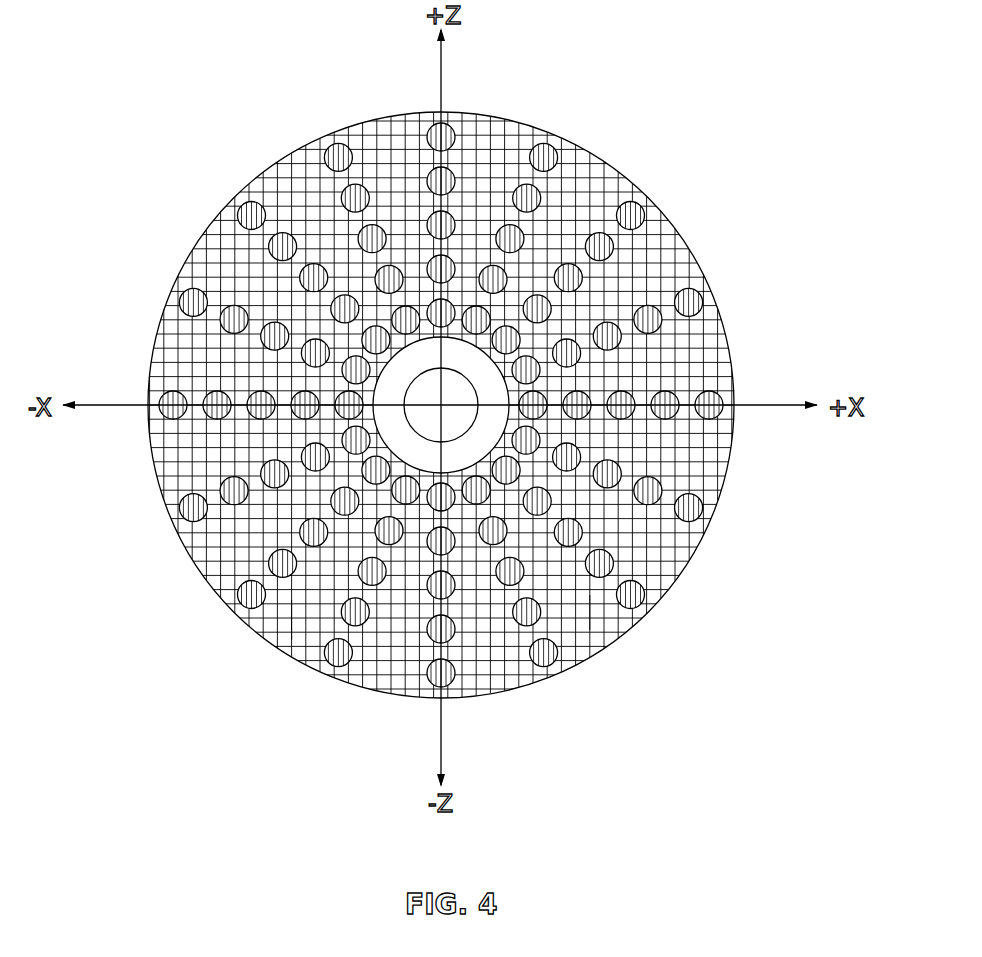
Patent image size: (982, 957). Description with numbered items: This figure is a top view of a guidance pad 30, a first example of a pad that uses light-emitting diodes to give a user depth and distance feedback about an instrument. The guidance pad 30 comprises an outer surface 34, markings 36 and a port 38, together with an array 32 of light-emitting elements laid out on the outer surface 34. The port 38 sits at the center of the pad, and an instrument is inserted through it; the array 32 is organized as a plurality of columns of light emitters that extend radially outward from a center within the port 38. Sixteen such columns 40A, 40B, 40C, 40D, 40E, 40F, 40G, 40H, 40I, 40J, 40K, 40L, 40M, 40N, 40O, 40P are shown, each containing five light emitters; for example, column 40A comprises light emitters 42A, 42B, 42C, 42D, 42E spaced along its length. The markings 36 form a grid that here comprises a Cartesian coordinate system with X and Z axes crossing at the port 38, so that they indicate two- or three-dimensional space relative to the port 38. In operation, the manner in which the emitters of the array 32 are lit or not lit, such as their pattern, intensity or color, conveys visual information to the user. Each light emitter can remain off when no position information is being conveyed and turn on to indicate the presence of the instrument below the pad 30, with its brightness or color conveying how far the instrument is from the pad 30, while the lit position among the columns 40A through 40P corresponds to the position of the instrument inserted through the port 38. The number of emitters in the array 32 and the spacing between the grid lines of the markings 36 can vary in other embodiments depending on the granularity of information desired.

The guidance pad 30 is at (432, 397).
The array of light-emitting elements 32 is at (692, 387).
The outer surface 34 is at (295, 620).
The markings 36 is at (596, 613).
The port 38 is at (463, 358).
The column of light emitters 40A is at (436, 186).
The column of light emitters 40B is at (576, 146).
The column of light emitters 40C is at (648, 191).
The column of light emitters 40D is at (707, 287).
The column of light emitters 40E is at (725, 442).
The column of light emitters 40F is at (710, 531).
The column of light emitters 40G is at (659, 608).
The column of light emitters 40H is at (564, 678).
The column of light emitters 40I is at (459, 687).
The column of light emitters 40J is at (321, 678).
The column of light emitters 40K is at (228, 613).
The column of light emitters 40L is at (184, 536).
The column of light emitters 40M is at (150, 413).
The column of light emitters 40N is at (168, 295).
The column of light emitters 40O is at (222, 210).
The column of light emitters 40P is at (302, 150).
The light emitter 42A is at (455, 318).
The light emitter 42B is at (427, 269).
The light emitter 42C is at (456, 227).
The light emitter 42D is at (428, 182).
The light emitter 42E is at (455, 132).